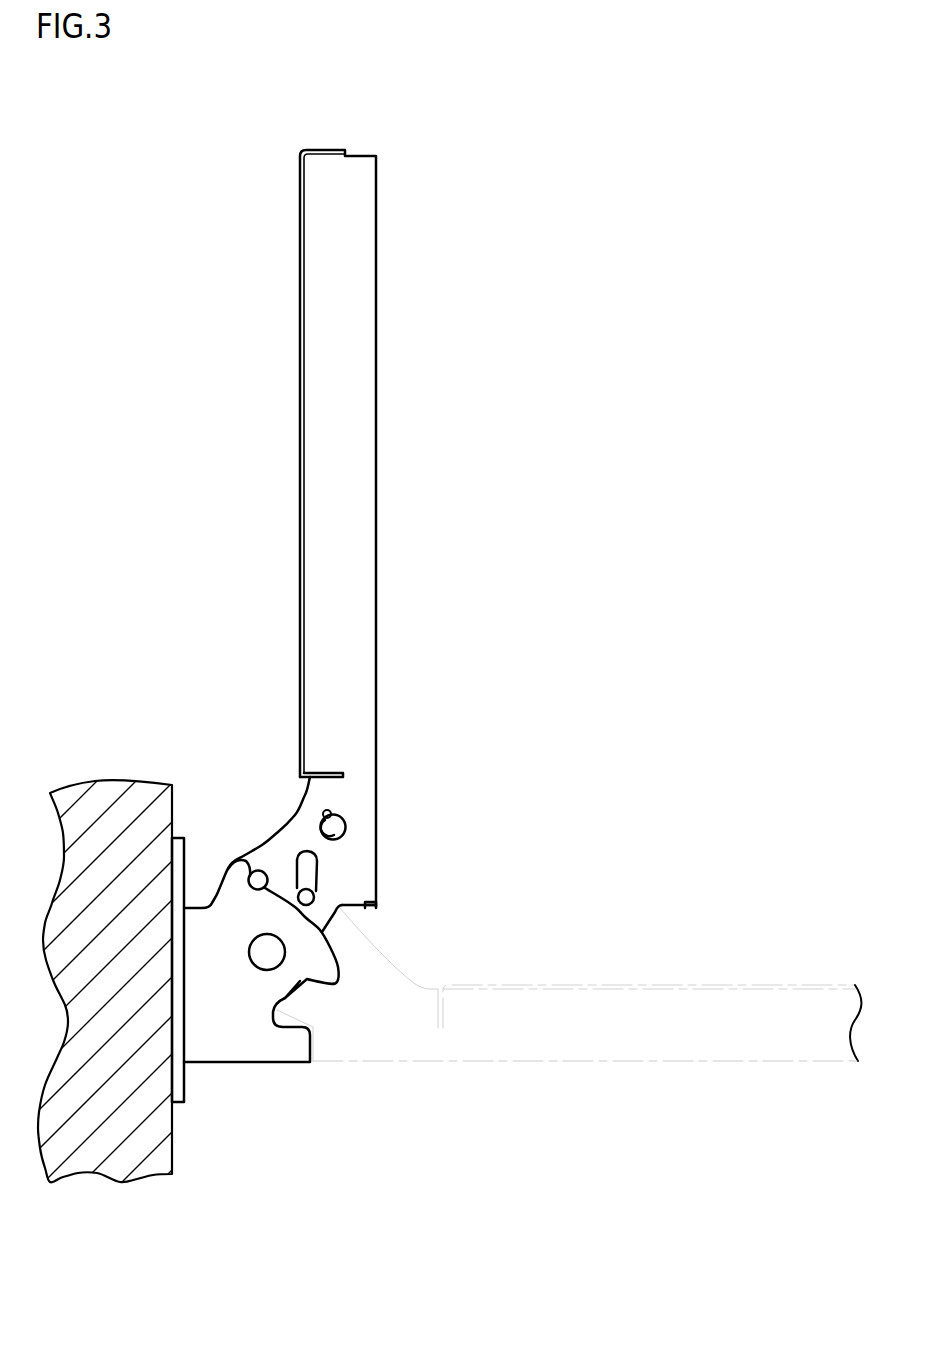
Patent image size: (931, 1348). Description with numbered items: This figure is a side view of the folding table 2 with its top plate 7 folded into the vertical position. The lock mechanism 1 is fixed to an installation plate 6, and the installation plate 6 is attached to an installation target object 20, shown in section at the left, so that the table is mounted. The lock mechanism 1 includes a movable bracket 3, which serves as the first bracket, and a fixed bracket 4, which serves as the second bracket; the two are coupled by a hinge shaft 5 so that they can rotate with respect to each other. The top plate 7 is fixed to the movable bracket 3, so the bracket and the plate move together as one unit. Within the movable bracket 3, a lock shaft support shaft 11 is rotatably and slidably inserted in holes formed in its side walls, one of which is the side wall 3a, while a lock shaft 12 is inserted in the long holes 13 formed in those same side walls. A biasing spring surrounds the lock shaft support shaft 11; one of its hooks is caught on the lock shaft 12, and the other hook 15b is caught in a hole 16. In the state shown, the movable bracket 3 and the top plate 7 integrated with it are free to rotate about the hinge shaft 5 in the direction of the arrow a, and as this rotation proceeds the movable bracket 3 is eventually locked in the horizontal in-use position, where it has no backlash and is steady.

The lock mechanism 1 is at (159, 659).
The folding table 2 is at (254, 609).
The movable bracket 3 is at (297, 830).
The side wall 3a is at (353, 874).
The fixed bracket 4 is at (257, 1032).
The hinge shaft 5 is at (253, 937).
The installation plate 6 is at (185, 1083).
The top plate 7 is at (298, 408).
The lock shaft support shaft 11 is at (259, 870).
The lock shaft 12 is at (315, 893).
The long hole 13 is at (318, 857).
The hook 15b is at (328, 812).
The hole 16 is at (347, 828).
The installation target object 20 is at (102, 1148).
The arrow a is at (503, 489).